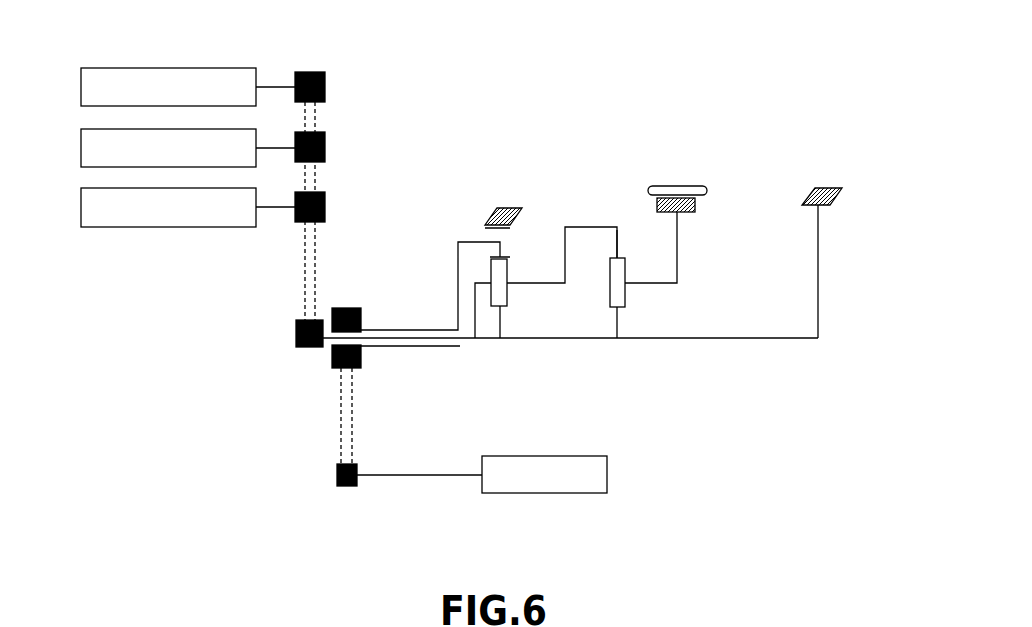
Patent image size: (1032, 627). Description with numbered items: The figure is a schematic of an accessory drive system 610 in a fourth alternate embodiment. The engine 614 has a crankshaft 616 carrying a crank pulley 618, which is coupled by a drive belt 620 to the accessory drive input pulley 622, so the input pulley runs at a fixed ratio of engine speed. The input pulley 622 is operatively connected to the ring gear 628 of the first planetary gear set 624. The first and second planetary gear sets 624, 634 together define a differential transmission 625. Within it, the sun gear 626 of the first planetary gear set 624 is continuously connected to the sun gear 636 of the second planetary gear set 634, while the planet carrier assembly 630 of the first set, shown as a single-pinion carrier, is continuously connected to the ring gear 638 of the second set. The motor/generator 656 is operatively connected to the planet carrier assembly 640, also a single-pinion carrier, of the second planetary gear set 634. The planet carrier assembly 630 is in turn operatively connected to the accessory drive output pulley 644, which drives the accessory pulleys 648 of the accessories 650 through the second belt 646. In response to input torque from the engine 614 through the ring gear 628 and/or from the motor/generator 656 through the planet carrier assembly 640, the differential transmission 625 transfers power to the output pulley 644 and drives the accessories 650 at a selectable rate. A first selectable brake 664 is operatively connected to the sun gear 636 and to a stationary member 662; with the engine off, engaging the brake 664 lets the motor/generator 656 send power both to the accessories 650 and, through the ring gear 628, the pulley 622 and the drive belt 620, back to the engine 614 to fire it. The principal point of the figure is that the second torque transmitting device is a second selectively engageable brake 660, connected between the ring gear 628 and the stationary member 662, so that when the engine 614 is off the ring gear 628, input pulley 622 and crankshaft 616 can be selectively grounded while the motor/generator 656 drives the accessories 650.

The accessory drive system 610 is at (819, 90).
The engine 614 is at (575, 493).
The crankshaft 616 is at (423, 476).
The crank pulley 618 is at (337, 471).
The drive belt 620 is at (336, 412).
The accessory drive input pulley 622 is at (348, 308).
The first planetary gear set 624 is at (528, 312).
The differential transmission 625 is at (809, 418).
The sun gear 626 is at (497, 311).
The ring gear 628 is at (490, 250).
The planet carrier assembly 630 is at (538, 281).
The second planetary gear set 634 is at (674, 312).
The sun gear 636 is at (610, 311).
The ring gear 638 is at (617, 256).
The planet carrier assembly 640 is at (663, 285).
The accessory drive output pulley 644 is at (296, 331).
The second belt 646 is at (292, 262).
The accessory pulleys 648 is at (327, 87).
The accessories 650 is at (81, 87).
The motor/generator 656 is at (683, 182).
The second selectively engageable brake 660 is at (485, 227).
The stationary member 662 is at (512, 199).
The first selectable brake 664 is at (827, 208).